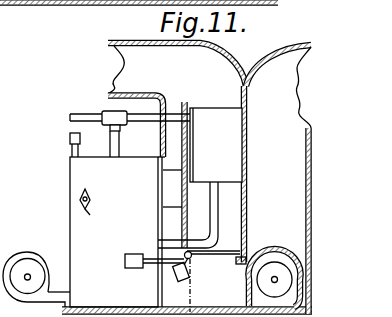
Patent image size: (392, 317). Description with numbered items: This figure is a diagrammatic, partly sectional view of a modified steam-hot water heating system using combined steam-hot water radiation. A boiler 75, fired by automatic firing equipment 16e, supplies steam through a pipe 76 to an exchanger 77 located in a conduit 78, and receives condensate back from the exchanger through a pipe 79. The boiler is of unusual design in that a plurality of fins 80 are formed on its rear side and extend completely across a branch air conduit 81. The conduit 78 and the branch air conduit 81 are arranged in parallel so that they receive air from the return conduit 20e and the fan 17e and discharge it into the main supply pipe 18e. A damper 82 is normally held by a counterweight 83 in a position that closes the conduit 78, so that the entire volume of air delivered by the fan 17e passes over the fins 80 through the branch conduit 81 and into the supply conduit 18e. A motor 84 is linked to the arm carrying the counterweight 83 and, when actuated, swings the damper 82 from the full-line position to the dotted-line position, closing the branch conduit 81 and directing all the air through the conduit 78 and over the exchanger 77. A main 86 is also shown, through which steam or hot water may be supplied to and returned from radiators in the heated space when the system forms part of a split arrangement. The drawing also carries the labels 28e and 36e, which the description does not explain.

The main supply pipe 18e is at (177, 100).
The return conduit 20e is at (278, 179).
The conduit 78 is at (247, 200).
The branch air conduit 81 is at (178, 130).
The boiler 75 is at (117, 233).
The fins 80 is at (168, 186).
The main 86 is at (89, 112).
The pipe 76 is at (140, 118).
The control lever 28e is at (70, 140).
The exchanger 77 is at (216, 145).
The pipe 79 is at (205, 239).
The thermostat 36e is at (97, 215).
The motor 84 is at (133, 270).
The damper 82 is at (193, 253).
The counterweight 83 is at (190, 280).
The automatic firing equipment 16e is at (26, 267).
The fan 17e is at (276, 262).